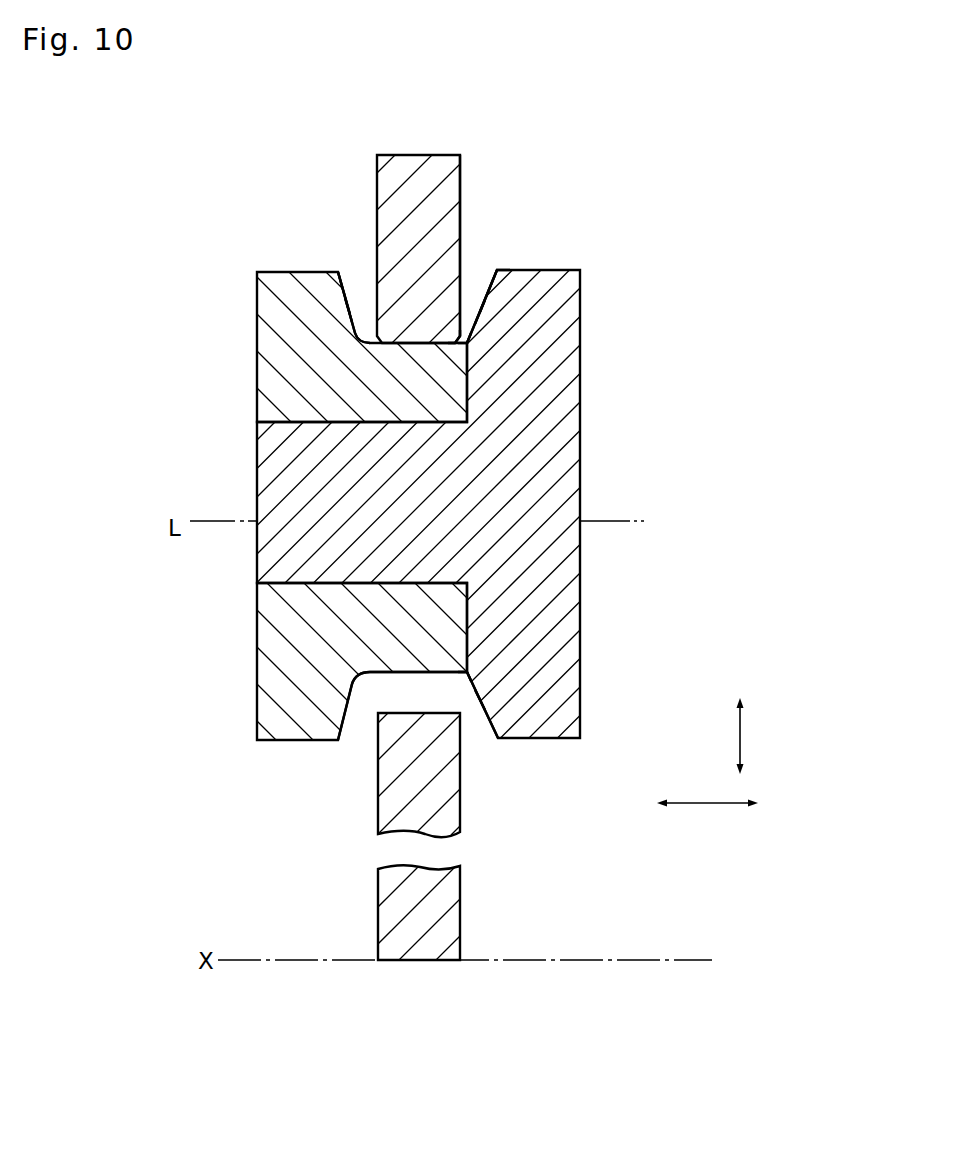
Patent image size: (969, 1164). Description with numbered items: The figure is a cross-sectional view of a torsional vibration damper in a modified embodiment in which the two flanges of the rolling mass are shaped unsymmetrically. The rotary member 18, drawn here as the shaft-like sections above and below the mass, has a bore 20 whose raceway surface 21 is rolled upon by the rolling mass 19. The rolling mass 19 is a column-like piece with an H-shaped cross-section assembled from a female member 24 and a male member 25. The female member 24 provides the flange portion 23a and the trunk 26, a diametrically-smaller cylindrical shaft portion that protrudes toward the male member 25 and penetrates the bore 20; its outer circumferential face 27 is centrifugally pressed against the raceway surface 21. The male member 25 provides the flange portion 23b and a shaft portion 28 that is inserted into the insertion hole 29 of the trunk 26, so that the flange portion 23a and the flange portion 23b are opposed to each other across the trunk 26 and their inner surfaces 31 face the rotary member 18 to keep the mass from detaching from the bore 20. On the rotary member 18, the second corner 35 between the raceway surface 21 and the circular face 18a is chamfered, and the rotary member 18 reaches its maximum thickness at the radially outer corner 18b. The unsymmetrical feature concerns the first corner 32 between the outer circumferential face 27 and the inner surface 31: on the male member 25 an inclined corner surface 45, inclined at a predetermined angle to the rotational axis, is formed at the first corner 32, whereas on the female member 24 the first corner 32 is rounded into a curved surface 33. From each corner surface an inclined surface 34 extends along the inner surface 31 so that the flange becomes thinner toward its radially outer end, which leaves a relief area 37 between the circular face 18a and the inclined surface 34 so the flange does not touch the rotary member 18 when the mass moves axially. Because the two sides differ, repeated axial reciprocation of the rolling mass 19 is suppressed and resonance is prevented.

The rotary member 18 is at (425, 172).
The circular face 18a is at (461, 212).
The radially outer corner 18b is at (462, 338).
The rolling mass 19 is at (628, 251).
The bore 20 is at (446, 704).
The raceway surface 21 is at (410, 347).
The flange portion 23a is at (280, 651).
The flange portion 23b is at (567, 596).
The female member 24 is at (175, 595).
The male member 25 is at (655, 528).
The trunk 26 is at (352, 605).
The outer circumferential face 27 is at (403, 673).
The shaft portion 28 is at (543, 505).
The insertion hole 29 is at (242, 470).
The inner surface 31 is at (493, 264).
The first corner 32 is at (478, 343).
The curved surface 33 is at (360, 340).
The inclined surface 34 is at (348, 323).
The second corner 35 is at (358, 320).
The relief area 37 is at (362, 248).
The inclined corner surface 45 is at (484, 318).